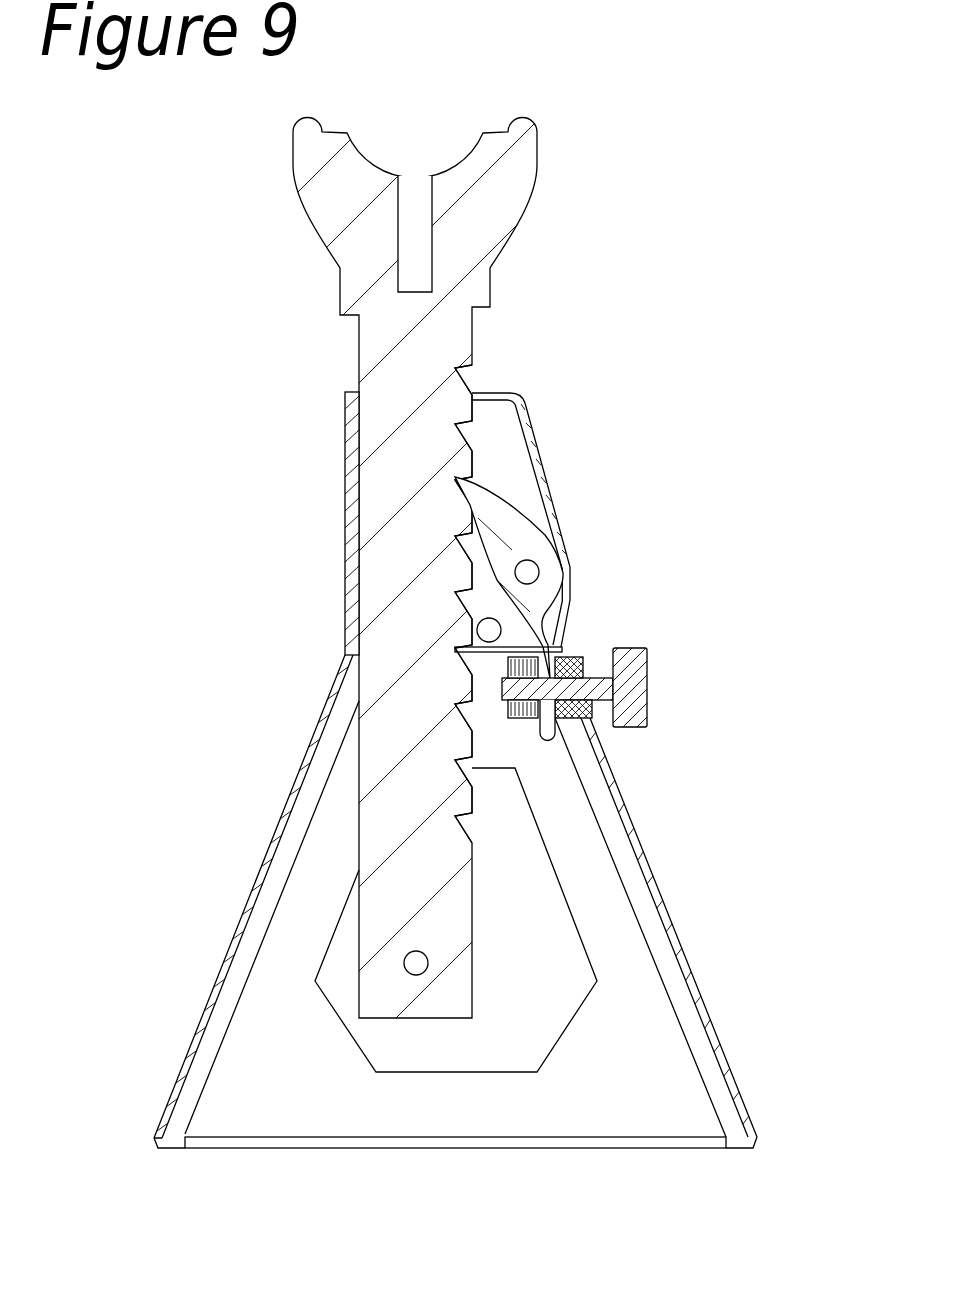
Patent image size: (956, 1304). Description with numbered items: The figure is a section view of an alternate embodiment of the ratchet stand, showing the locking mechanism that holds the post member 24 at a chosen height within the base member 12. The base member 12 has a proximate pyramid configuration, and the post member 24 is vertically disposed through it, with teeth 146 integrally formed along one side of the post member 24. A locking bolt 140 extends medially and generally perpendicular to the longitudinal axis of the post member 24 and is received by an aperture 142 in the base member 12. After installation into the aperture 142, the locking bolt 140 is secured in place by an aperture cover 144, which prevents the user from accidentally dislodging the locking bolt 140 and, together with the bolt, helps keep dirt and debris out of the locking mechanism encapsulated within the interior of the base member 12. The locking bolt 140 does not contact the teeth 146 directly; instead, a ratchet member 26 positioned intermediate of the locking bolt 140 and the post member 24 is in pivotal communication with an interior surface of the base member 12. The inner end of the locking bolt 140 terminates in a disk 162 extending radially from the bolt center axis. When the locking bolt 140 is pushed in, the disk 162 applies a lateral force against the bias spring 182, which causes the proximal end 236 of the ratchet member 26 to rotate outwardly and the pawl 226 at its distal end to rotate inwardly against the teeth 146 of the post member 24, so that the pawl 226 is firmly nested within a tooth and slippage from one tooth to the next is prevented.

The base member 12 is at (611, 905).
The post member 24 is at (395, 546).
The teeth 146 is at (452, 466).
The pawl 226 is at (500, 510).
The ratchet member 26 is at (494, 516).
The bias spring 182 is at (553, 646).
The disk 162 is at (514, 684).
The aperture cover 144 is at (590, 660).
The proximal end 236 is at (548, 656).
The aperture 142 is at (570, 722).
The locking bolt 140 is at (656, 681).